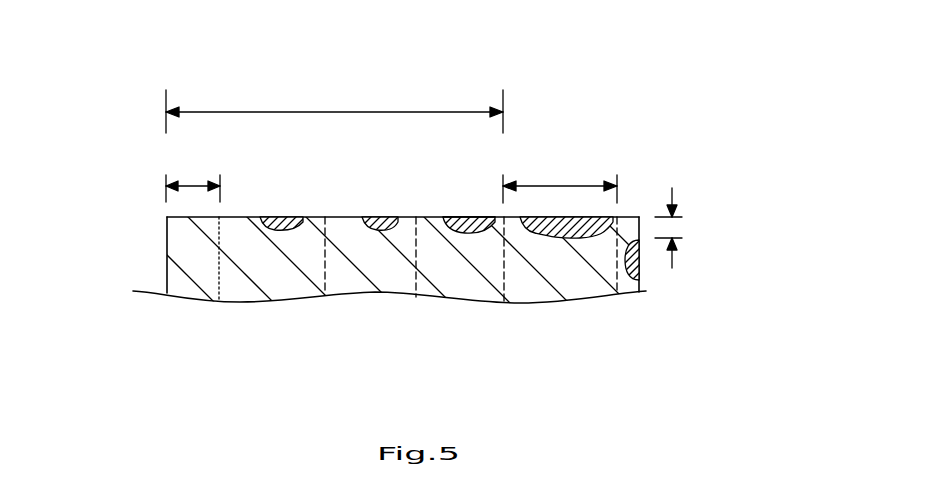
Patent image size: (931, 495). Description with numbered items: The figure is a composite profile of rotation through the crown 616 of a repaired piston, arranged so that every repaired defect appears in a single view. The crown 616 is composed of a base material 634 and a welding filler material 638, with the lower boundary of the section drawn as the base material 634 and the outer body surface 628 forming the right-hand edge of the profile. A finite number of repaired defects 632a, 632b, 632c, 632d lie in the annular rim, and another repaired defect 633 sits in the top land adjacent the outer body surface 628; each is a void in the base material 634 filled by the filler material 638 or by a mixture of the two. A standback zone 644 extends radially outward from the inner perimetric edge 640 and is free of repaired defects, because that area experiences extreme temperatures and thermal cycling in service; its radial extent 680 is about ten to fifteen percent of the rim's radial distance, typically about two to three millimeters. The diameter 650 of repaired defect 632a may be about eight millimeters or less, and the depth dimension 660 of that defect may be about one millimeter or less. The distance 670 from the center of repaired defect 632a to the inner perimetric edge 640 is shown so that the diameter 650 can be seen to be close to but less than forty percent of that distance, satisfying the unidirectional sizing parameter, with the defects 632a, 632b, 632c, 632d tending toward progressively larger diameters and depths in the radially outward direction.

The crown 616 is at (393, 237).
The outer body surface 628 is at (653, 283).
The repaired defect 632a is at (548, 237).
The repaired defect 632b is at (476, 233).
The repaired defect 632c is at (387, 217).
The repaired defect 632d is at (276, 217).
The repaired defect 633 is at (632, 290).
The base material 634 is at (380, 284).
The welding filler material 638 is at (465, 220).
The inner perimetric edge 640 is at (167, 217).
The standback zone 644 is at (170, 261).
The diameter 650 is at (560, 186).
The depth dimension 660 is at (683, 229).
The distance 670 is at (331, 112).
The radial extent 680 is at (191, 186).